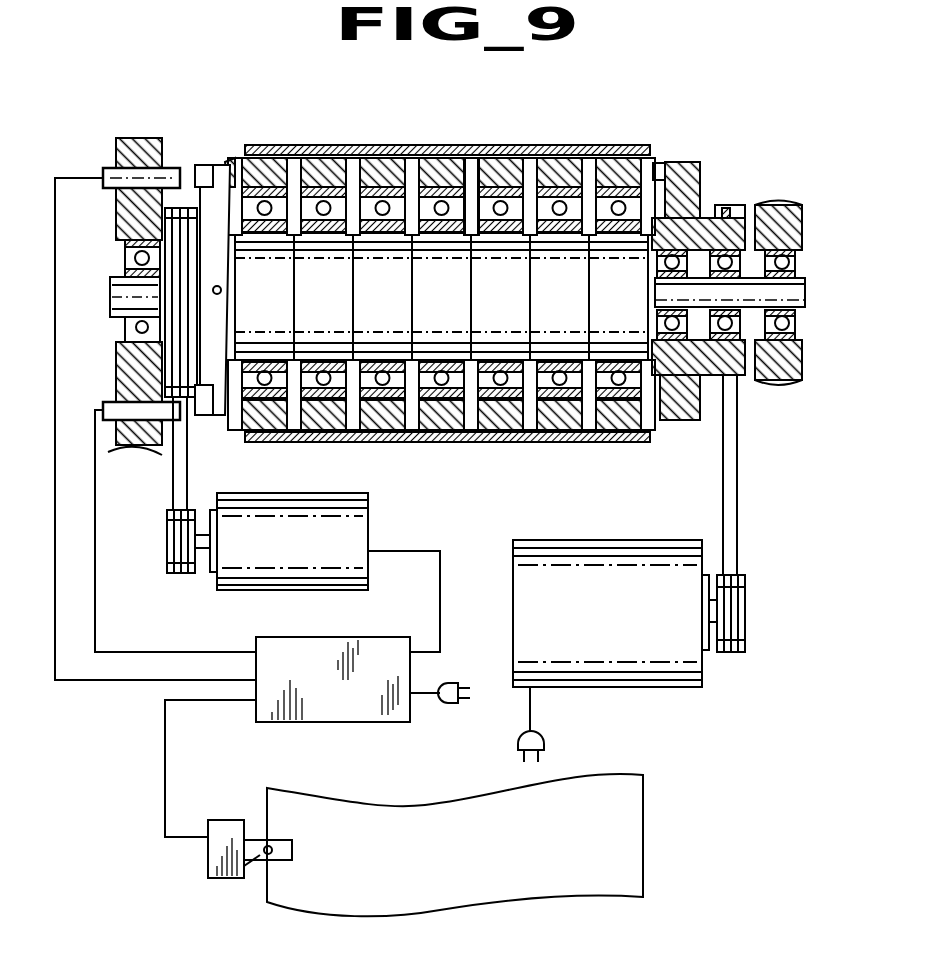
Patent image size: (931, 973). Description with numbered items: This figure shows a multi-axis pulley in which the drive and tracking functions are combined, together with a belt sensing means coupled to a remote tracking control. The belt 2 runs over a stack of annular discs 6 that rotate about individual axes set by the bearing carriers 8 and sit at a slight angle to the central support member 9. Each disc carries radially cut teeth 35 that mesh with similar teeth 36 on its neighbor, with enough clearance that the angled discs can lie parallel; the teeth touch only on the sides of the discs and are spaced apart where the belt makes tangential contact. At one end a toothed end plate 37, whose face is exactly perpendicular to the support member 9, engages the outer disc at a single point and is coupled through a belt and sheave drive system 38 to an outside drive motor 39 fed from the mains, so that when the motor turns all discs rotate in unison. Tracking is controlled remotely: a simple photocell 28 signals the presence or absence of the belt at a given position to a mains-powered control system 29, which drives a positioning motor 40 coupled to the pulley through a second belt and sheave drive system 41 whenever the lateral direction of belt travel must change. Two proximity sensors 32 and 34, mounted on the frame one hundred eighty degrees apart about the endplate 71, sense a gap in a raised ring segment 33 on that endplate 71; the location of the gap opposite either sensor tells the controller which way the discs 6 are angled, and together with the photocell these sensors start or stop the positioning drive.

The belt 2 is at (627, 840).
The annular discs 6 is at (262, 162).
The bearing carriers 8 is at (377, 318).
The support member 9 is at (803, 300).
The photocell 28 is at (212, 878).
The control system 29 is at (327, 688).
The proximity sensor 32 is at (110, 172).
The raised ring segment 33 is at (198, 195).
The proximity sensor 34 is at (133, 450).
The teeth 35 is at (428, 148).
The teeth 36 is at (478, 150).
The end plate 37 is at (680, 170).
The belt and sheave drive system 38 is at (735, 530).
The drive motor 39 is at (652, 630).
The positioning motor 40 is at (352, 533).
The belt and sheave drive system 41 is at (183, 480).
The endplate 71 is at (235, 330).